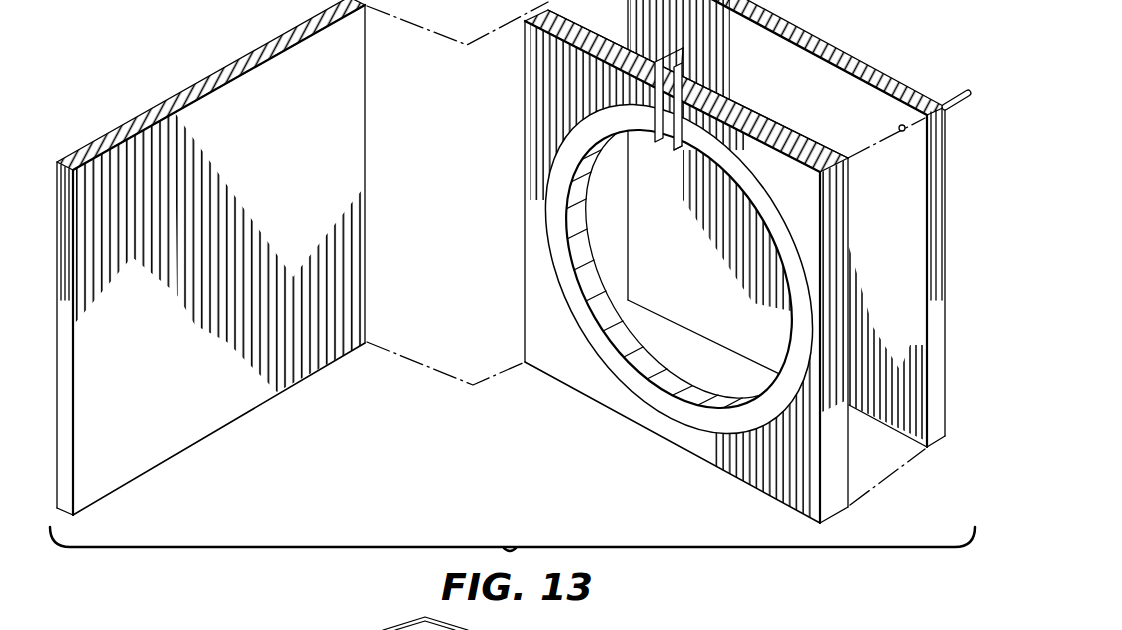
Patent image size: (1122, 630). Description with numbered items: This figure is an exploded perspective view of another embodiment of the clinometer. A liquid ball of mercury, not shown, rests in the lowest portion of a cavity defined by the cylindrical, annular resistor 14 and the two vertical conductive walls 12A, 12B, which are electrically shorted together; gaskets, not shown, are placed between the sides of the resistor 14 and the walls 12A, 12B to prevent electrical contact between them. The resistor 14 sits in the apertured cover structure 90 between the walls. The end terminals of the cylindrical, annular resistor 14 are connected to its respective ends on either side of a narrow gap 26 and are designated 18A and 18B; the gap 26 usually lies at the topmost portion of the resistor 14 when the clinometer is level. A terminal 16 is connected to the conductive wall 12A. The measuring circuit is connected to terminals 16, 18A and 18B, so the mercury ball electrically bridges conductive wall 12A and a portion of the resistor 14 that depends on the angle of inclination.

The vertical conductive wall 12A is at (873, 107).
The vertical conductive wall 12B is at (348, 121).
The cover structure 90 is at (777, 161).
The cylindrical, annular resistor 14 is at (797, 337).
The terminal 16 is at (955, 95).
The end terminal 18A is at (657, 60).
The end terminal 18B is at (693, 68).
The narrow gap 26 is at (663, 140).